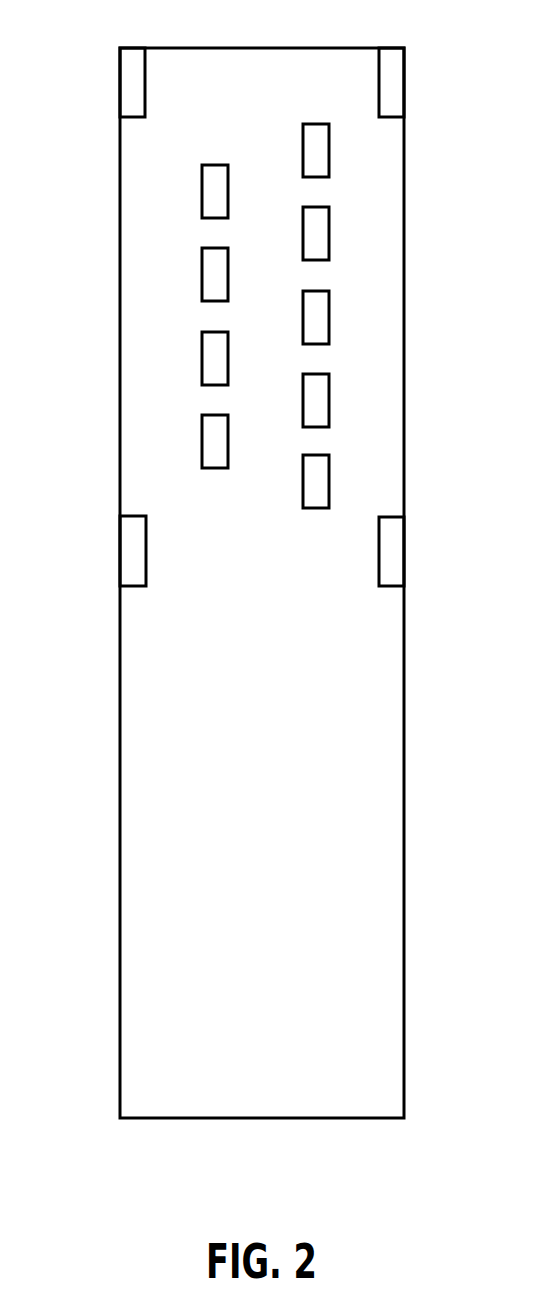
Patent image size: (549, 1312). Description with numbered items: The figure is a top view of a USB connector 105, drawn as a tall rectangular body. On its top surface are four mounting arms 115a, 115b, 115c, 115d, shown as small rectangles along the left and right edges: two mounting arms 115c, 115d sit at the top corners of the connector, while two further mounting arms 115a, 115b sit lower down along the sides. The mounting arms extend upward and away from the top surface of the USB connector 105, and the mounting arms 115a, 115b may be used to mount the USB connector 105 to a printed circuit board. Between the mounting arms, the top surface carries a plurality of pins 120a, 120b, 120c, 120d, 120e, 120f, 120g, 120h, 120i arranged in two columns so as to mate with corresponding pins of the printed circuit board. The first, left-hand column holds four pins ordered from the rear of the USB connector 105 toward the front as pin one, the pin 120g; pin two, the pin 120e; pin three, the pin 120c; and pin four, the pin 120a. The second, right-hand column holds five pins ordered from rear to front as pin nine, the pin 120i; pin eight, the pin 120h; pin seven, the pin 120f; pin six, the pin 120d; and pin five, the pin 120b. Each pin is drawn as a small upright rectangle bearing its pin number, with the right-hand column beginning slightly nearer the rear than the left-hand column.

The USB connector 105 is at (173, 1120).
The mounting arm 115a is at (130, 516).
The mounting arm 115b is at (392, 517).
The mounting arm 115c is at (129, 48).
The mounting arm 115d is at (389, 48).
The pin 120a is at (202, 443).
The pin 120b is at (329, 475).
The pin 120c is at (202, 360).
The pin 120d is at (329, 395).
The pin 120e is at (202, 276).
The pin 120f is at (329, 312).
The pin 120g is at (202, 192).
The pin 120h is at (329, 228).
The pin 120i is at (329, 157).